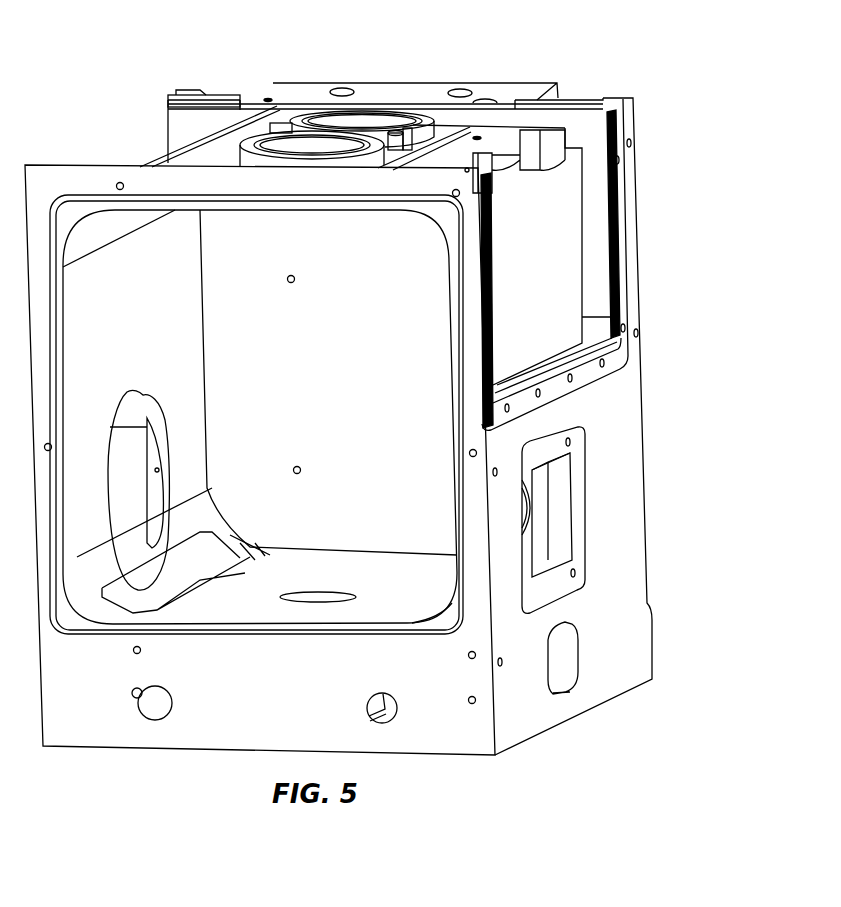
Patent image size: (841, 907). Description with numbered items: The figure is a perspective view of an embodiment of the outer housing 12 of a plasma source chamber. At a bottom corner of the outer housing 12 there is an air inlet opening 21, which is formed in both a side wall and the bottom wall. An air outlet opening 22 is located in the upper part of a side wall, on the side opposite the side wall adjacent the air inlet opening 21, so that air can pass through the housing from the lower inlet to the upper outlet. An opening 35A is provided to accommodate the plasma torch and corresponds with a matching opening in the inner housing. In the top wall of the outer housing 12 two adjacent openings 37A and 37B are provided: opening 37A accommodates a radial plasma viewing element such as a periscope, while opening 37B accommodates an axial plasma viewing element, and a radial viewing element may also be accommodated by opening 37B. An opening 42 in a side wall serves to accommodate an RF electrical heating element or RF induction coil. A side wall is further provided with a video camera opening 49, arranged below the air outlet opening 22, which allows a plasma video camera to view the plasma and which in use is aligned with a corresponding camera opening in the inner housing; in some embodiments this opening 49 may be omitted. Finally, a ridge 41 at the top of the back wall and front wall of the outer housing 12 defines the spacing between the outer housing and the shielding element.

The outer housing 12 is at (196, 157).
The ridge 41 is at (241, 106).
The opening 37A is at (286, 142).
The opening 37B is at (370, 122).
The air outlet opening 22 is at (553, 278).
The video camera opening 49 is at (526, 513).
The opening 42 is at (146, 496).
The air inlet opening 21 is at (193, 587).
The opening 35A is at (316, 600).